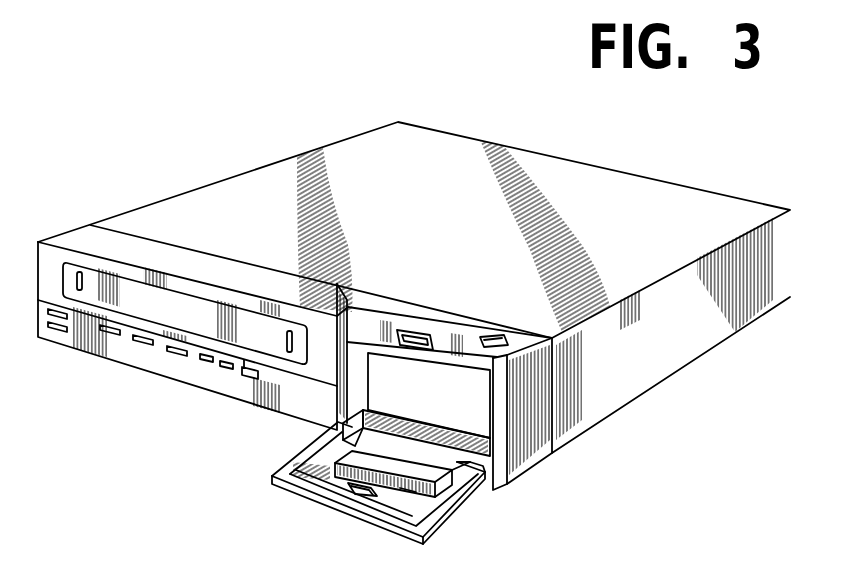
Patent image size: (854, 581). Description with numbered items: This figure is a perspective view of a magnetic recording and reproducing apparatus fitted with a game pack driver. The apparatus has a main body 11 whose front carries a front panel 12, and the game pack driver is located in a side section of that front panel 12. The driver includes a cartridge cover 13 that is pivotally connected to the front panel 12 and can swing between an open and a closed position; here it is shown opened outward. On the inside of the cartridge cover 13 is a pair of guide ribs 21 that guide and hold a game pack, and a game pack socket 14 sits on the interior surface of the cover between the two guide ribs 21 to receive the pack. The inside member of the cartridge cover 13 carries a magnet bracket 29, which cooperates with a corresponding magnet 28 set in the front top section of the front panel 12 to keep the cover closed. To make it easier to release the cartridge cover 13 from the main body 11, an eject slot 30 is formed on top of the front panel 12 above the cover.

The main body 11 is at (267, 158).
The front panel 12 is at (540, 428).
The cartridge cover 13 is at (280, 486).
The game pack socket 14 is at (444, 486).
The guide ribs 21 is at (478, 488).
The magnet 28 is at (417, 326).
The magnet bracket 29 is at (347, 494).
The eject slot 30 is at (495, 334).